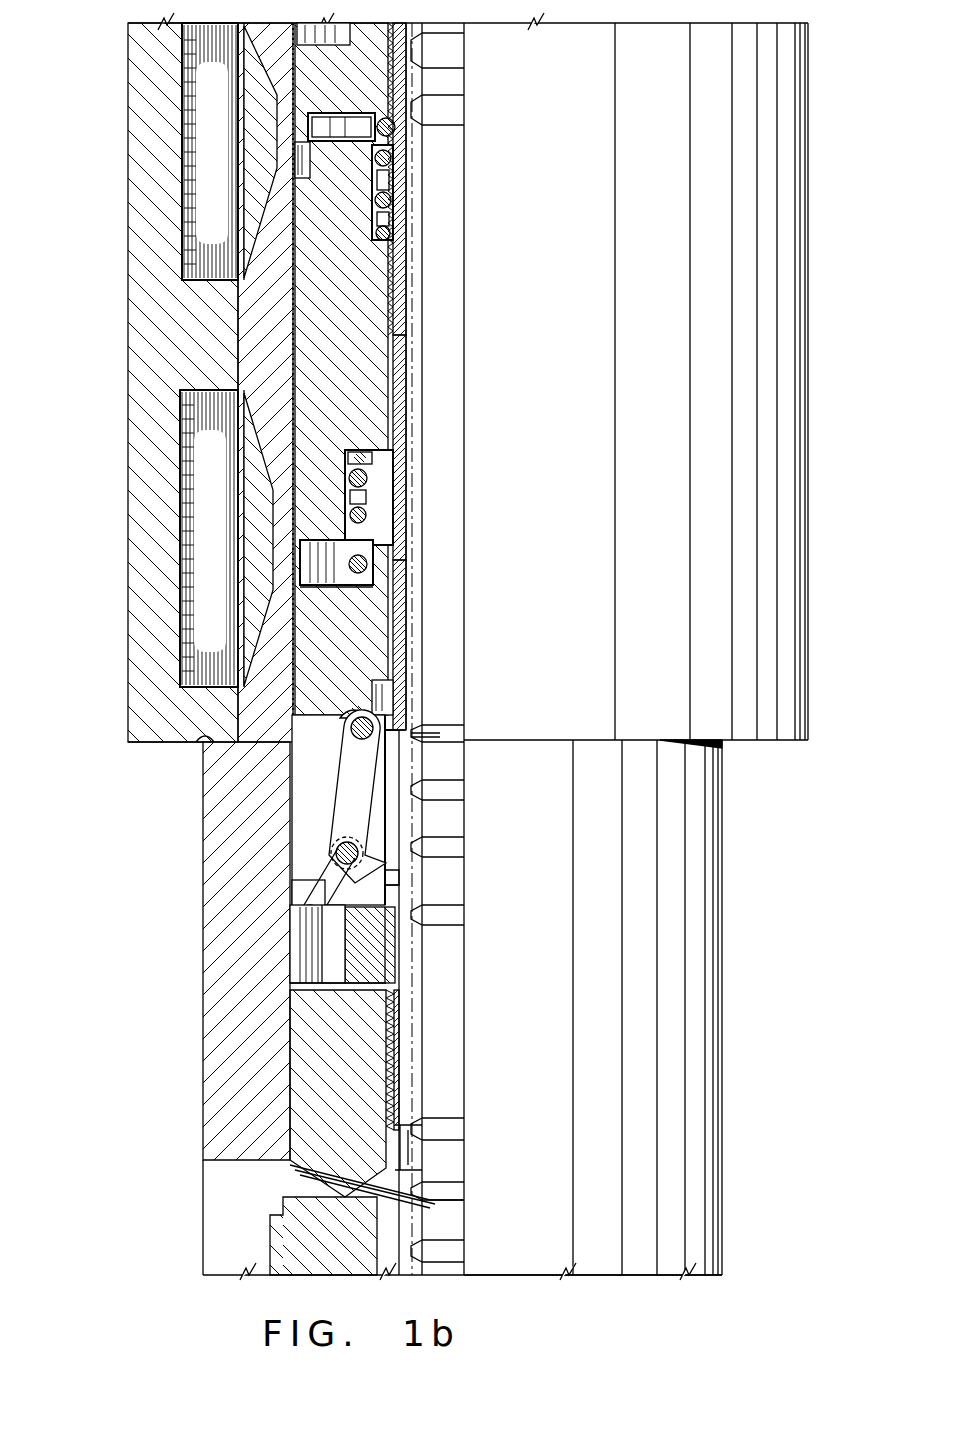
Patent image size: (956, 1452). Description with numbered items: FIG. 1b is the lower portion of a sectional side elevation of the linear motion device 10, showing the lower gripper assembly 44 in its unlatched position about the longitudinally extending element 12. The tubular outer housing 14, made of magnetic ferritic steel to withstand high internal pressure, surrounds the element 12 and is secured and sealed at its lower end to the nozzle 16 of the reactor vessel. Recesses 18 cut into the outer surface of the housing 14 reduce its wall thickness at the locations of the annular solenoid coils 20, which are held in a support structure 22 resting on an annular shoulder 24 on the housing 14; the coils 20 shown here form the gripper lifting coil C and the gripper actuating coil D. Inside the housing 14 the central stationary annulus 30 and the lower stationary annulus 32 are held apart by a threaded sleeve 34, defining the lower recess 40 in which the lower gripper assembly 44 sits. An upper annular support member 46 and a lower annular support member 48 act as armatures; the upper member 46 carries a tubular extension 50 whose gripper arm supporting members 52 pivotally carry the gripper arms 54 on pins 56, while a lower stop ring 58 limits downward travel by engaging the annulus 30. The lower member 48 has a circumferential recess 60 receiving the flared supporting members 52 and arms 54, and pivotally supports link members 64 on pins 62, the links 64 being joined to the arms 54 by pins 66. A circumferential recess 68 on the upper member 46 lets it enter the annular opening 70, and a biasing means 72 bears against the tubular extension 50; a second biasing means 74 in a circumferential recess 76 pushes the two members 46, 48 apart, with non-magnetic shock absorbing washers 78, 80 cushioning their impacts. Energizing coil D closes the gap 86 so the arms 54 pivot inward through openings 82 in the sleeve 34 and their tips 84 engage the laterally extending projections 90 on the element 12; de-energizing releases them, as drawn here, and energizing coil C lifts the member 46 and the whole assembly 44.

The linear motion device 10 is at (118, 985).
The longitudinally extending element 12 is at (464, 935).
The tubular outer housing 14 is at (205, 930).
The nozzle 16 is at (300, 1230).
The recesses 18 is at (262, 195).
The annular solenoid coils 20 is at (185, 107).
The support structure 22 is at (130, 352).
The annular shoulder 24 is at (197, 745).
The central stationary annulus 30 is at (392, 70).
The lower stationary annulus 32 is at (375, 1068).
The sleeve 34 is at (390, 1000).
The lower recess 40 is at (310, 977).
The lower gripper assembly 44 is at (388, 762).
The upper annular support member 46 is at (392, 302).
The lower annular support member 48 is at (392, 610).
The tubular extension 50 is at (392, 410).
The gripper arm supporting members 52 is at (380, 690).
The gripper arms 54 is at (365, 800).
The pins 56 is at (385, 715).
The lower stop ring 58 is at (373, 953).
The circumferential recess 60 is at (355, 710).
The pins 62 is at (300, 915).
The link members 64 is at (312, 880).
The pins 66 is at (360, 855).
The circumferential recess 68 is at (300, 160).
The annular opening 70 is at (312, 115).
The biasing means 72 is at (395, 160).
The second biasing means 74 is at (375, 490).
The circumferential recess 76 is at (345, 512).
The shock absorbing washer 78 is at (405, 102).
The shock absorbing washer 80 is at (308, 578).
The openings 82 is at (400, 882).
The tips 84 is at (396, 875).
The gap 86 is at (310, 600).
The laterally extending projections 90 is at (453, 729).
The gripper lifting coil C is at (180, 178).
The gripper actuating coil D is at (180, 495).